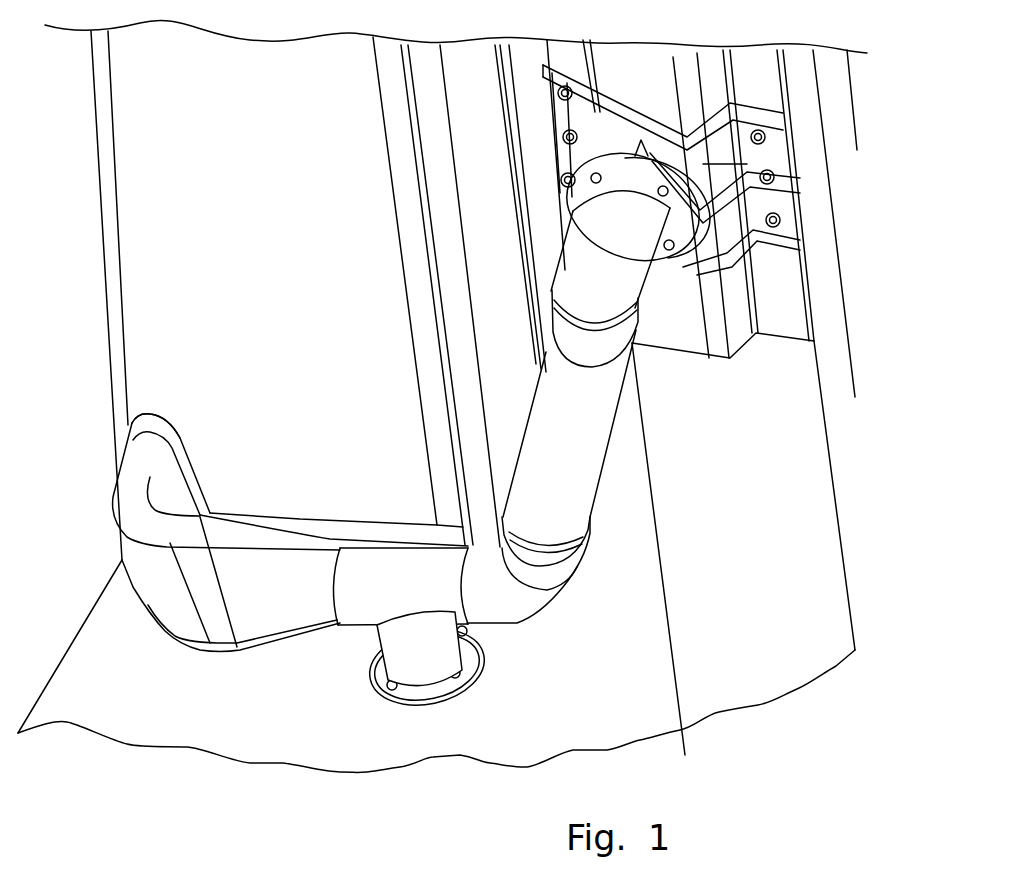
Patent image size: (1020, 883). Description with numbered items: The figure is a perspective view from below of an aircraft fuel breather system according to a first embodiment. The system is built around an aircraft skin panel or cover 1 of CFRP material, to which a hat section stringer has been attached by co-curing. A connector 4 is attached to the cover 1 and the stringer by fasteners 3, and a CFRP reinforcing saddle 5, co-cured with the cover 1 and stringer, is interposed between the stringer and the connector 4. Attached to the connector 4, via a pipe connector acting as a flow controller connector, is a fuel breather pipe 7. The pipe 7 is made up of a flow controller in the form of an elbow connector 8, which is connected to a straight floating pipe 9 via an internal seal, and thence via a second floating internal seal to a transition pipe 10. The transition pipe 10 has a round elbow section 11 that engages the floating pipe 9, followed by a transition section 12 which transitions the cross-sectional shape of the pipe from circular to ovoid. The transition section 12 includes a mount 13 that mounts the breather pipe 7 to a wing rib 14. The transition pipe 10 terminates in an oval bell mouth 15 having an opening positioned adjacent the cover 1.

The aircraft skin panel or cover 1 is at (283, 285).
The fasteners 3 is at (790, 187).
The connector 4 is at (762, 167).
The CFRP reinforcing saddle 5 is at (696, 340).
The fuel breather pipe 7 is at (612, 587).
The elbow connector 8 is at (623, 270).
The straight floating pipe 9 is at (580, 473).
The transition pipe 10 is at (357, 660).
The round elbow section 11 is at (538, 595).
The transition section 12 is at (255, 597).
The mount 13 is at (440, 687).
The wing rib 14 is at (293, 733).
The oval bell mouth 15 is at (150, 424).